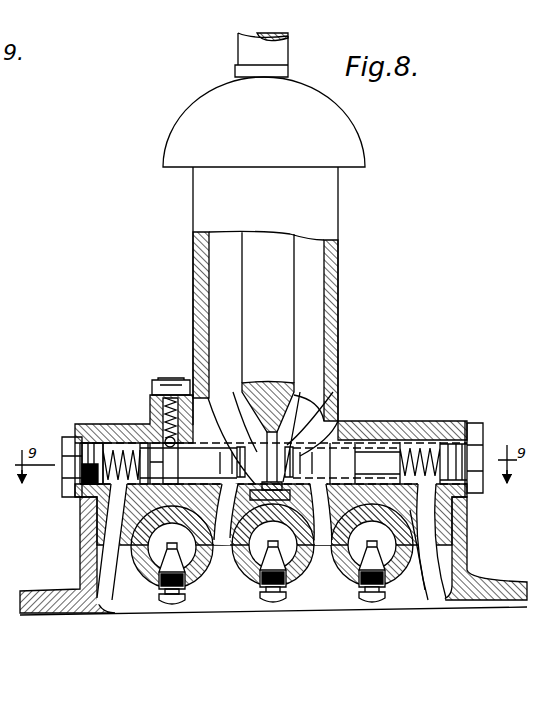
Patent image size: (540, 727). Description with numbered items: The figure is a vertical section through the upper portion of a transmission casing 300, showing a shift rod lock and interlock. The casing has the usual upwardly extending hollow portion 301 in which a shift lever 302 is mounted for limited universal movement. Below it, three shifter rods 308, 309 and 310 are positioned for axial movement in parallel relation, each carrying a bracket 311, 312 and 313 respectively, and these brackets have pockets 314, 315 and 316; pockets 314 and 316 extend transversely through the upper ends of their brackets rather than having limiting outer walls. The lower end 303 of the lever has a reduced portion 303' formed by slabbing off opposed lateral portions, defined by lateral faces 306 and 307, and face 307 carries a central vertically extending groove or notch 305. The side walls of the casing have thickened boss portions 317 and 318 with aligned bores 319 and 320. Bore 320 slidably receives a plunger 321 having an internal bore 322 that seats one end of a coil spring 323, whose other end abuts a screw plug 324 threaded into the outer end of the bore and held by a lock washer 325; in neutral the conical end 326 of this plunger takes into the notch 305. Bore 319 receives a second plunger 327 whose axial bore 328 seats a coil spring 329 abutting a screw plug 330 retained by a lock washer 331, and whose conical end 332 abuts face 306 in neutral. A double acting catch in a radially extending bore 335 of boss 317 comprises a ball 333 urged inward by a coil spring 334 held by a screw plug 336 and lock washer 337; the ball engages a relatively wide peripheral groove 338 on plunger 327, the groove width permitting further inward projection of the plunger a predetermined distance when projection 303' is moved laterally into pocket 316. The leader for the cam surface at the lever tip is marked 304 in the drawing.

The transmission casing 300 is at (340, 268).
The upwardly extending hollow portion 301 is at (341, 250).
The shift lever 302 is at (253, 58).
The lower end of shift lever 303 is at (266, 296).
The reduced portion 303' is at (341, 393).
The cam surface 304 is at (312, 385).
The groove or notch 305 is at (284, 378).
The lateral face 306 is at (268, 399).
The lateral face 307 is at (333, 398).
The shifter rod 308 is at (152, 582).
The shifter rod 309 is at (300, 590).
The shifter rod 310 is at (396, 590).
The bracket 311 is at (212, 586).
The bracket 312 is at (264, 588).
The bracket 313 is at (432, 600).
The pocket 314 is at (230, 545).
The pocket 315 is at (352, 450).
The pocket 316 is at (323, 548).
The boss portion 317 is at (79, 430).
The boss portion 318 is at (404, 438).
The bore 319 is at (96, 425).
The bore 320 is at (434, 440).
The plunger 321 is at (460, 525).
The internal bore 322 is at (446, 512).
The coil spring 323 is at (468, 498).
The screw plug 324 is at (483, 455).
The lock washer 325 is at (470, 428).
The conical end 326 is at (344, 444).
The plunger 327 is at (152, 500).
The axial bore 328 is at (193, 400).
The coil spring 329 is at (86, 520).
The screw plug 330 is at (66, 486).
The lock washer 331 is at (80, 505).
The conical end 332 is at (237, 395).
The ball 333 is at (141, 432).
The coil spring 334 is at (152, 432).
The radially extending bore 335 is at (149, 425).
The screw plug 336 is at (172, 379).
The lock washer 337 is at (166, 378).
The peripheral groove 338 is at (188, 463).